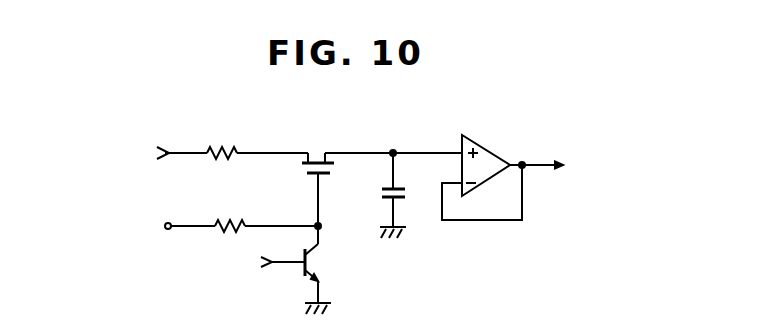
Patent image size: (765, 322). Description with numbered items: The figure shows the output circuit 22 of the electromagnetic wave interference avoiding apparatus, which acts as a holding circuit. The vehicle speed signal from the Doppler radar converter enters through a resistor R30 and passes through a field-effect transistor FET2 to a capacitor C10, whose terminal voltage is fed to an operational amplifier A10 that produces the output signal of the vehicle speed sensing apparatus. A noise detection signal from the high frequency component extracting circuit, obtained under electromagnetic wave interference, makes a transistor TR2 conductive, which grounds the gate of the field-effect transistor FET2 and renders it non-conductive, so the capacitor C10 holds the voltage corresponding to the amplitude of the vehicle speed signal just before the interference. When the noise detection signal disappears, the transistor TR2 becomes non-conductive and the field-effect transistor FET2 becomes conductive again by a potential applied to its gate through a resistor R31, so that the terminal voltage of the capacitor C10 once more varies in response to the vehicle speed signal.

The output circuit 22 is at (272, 130).
The resistor R30 is at (219, 166).
The field-effect transistor FET2 is at (301, 189).
The capacitor C10 is at (381, 195).
The operational amplifier A10 is at (502, 177).
The resistor R31 is at (231, 214).
The transistor TR2 is at (314, 270).